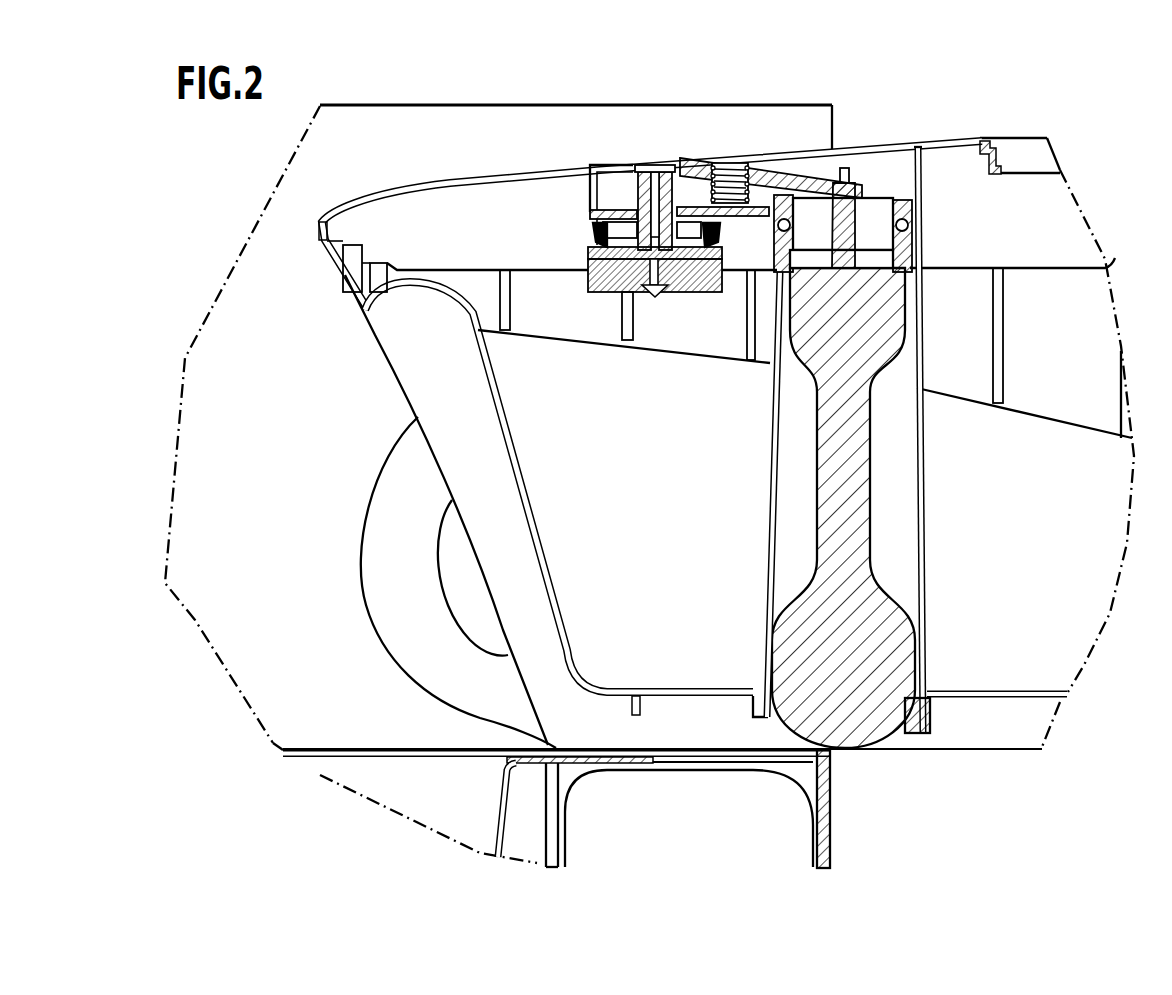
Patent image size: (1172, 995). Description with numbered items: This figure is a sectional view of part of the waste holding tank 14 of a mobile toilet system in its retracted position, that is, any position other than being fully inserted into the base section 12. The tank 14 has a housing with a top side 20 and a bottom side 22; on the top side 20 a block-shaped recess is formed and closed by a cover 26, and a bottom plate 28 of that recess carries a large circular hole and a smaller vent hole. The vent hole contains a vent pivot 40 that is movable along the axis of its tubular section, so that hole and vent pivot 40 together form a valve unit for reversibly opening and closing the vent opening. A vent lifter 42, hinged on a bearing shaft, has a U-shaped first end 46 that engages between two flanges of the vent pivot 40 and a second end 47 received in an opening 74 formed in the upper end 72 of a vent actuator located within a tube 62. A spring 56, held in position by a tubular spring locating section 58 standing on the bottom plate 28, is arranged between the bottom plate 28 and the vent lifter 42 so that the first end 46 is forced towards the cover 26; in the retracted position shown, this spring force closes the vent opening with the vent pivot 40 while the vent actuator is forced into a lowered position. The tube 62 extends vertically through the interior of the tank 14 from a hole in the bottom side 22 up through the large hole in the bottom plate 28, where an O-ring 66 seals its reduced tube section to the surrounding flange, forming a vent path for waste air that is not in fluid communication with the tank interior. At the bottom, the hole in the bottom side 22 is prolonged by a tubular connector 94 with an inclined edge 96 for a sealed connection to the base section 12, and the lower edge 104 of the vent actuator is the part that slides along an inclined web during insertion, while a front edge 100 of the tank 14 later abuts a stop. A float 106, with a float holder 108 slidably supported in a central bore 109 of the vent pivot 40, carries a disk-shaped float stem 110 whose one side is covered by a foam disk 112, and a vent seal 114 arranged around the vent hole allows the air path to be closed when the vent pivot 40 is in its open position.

The base section 12 is at (318, 784).
The waste holding tank 14 is at (1034, 124).
The top side 20 is at (983, 138).
The bottom side 22 is at (698, 684).
The cover 26 is at (917, 145).
The bottom plate 28 is at (592, 190).
The vent pivot 40 is at (592, 167).
The vent lifter 42 is at (803, 166).
The first end 46 is at (630, 185).
The second end 47 is at (905, 192).
The spring 56 is at (740, 172).
The spring locating section 58 is at (725, 212).
The tube 62 is at (922, 487).
The O-ring 66 is at (913, 230).
The upper end 72 is at (845, 186).
The opening 74 is at (869, 188).
The tubular connector 94 is at (932, 721).
The inclined edge 96 is at (928, 734).
The front edge 100 is at (500, 720).
The lower edge 104 is at (843, 748).
The float 106 is at (632, 236).
The float holder 108 is at (655, 190).
The central bore 109 is at (672, 190).
The float stem 110 is at (587, 255).
The disk 112 is at (708, 293).
The vent seal 114 is at (592, 220).